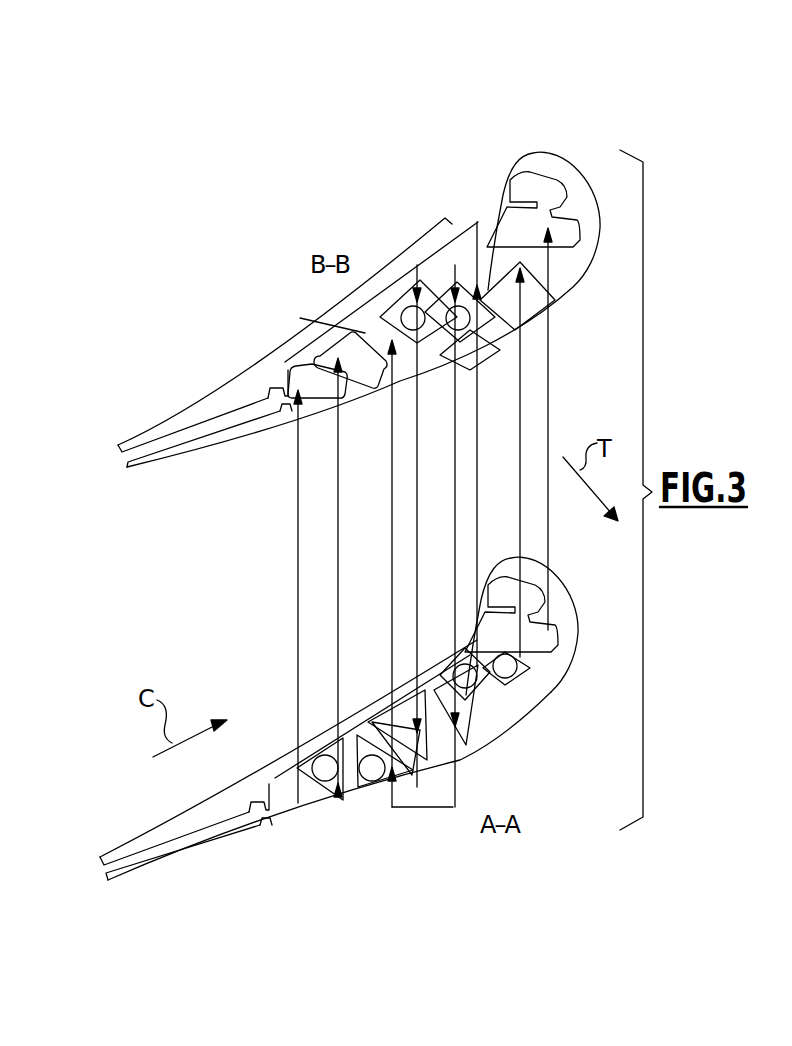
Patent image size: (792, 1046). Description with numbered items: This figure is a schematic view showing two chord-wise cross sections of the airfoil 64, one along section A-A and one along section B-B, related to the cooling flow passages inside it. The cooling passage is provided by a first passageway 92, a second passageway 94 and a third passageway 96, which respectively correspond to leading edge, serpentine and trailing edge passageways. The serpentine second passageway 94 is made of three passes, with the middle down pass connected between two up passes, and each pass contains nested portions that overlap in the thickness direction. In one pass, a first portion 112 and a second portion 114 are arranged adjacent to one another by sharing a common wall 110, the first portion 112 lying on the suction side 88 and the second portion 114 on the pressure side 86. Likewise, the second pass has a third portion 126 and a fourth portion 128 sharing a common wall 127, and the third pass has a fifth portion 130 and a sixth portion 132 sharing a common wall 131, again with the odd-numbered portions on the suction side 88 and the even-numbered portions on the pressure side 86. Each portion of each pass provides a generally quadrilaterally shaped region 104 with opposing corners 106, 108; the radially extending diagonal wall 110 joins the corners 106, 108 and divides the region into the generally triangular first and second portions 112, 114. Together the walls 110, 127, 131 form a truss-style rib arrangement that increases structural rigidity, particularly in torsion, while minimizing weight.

The airfoil 64 is at (546, 138).
The first passageway 92 is at (581, 243).
The second passageway 94 is at (376, 267).
The third passageway 96 is at (262, 386).
The sixth portion 132 is at (357, 376).
The fifth portion 130 is at (400, 366).
The common wall 131 is at (372, 328).
The common wall 127 is at (452, 345).
The third portion 126 is at (487, 322).
The fourth portion 128 is at (455, 350).
The quadrilaterally shaped region 104 is at (562, 673).
The corner 106 is at (477, 640).
The first portion 112 is at (540, 655).
The common wall 110 is at (520, 692).
The corner 108 is at (515, 700).
The second portion 114 is at (492, 705).
The suction side 88 is at (363, 805).
The pressure side 86 is at (468, 662).